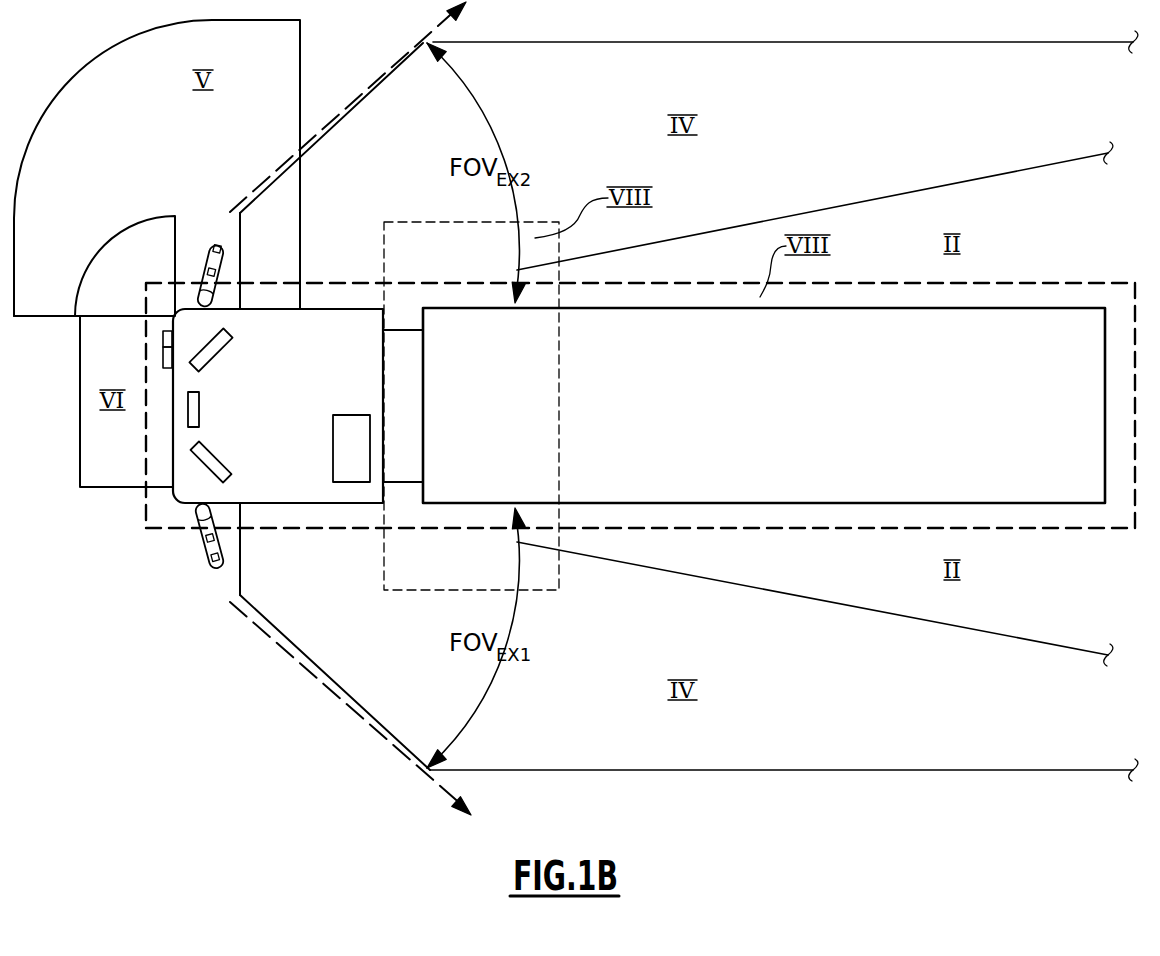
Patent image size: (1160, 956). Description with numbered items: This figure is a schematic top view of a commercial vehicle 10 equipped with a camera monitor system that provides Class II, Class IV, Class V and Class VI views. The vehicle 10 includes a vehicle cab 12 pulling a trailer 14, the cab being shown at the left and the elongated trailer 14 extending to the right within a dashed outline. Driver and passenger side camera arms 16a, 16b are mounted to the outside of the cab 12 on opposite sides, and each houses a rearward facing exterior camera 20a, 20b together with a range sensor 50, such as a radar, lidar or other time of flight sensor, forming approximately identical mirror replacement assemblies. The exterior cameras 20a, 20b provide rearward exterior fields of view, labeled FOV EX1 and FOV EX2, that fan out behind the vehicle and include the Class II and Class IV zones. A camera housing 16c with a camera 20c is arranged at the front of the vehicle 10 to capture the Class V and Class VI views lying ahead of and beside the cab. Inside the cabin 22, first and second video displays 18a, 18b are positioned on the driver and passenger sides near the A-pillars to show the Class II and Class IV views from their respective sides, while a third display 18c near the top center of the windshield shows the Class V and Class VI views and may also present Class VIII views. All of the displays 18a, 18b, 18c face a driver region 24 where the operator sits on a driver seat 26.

The commercial vehicle 10 is at (102, 270).
The vehicle cab 12 is at (165, 500).
The trailer 14 is at (1015, 300).
The driver side camera arm 16a is at (212, 553).
The passenger side camera arm 16b is at (206, 270).
The camera housing 16c is at (163, 354).
The first video display 18a is at (222, 468).
The second video display 18b is at (222, 344).
The third display 18c is at (188, 410).
The exterior camera 20a is at (224, 562).
The exterior camera 20b is at (222, 255).
The camera 20c is at (163, 335).
The cabin 22 is at (325, 312).
The driver region 24 is at (320, 440).
The driver seat 26 is at (352, 427).
The range sensor 50 is at (206, 272).